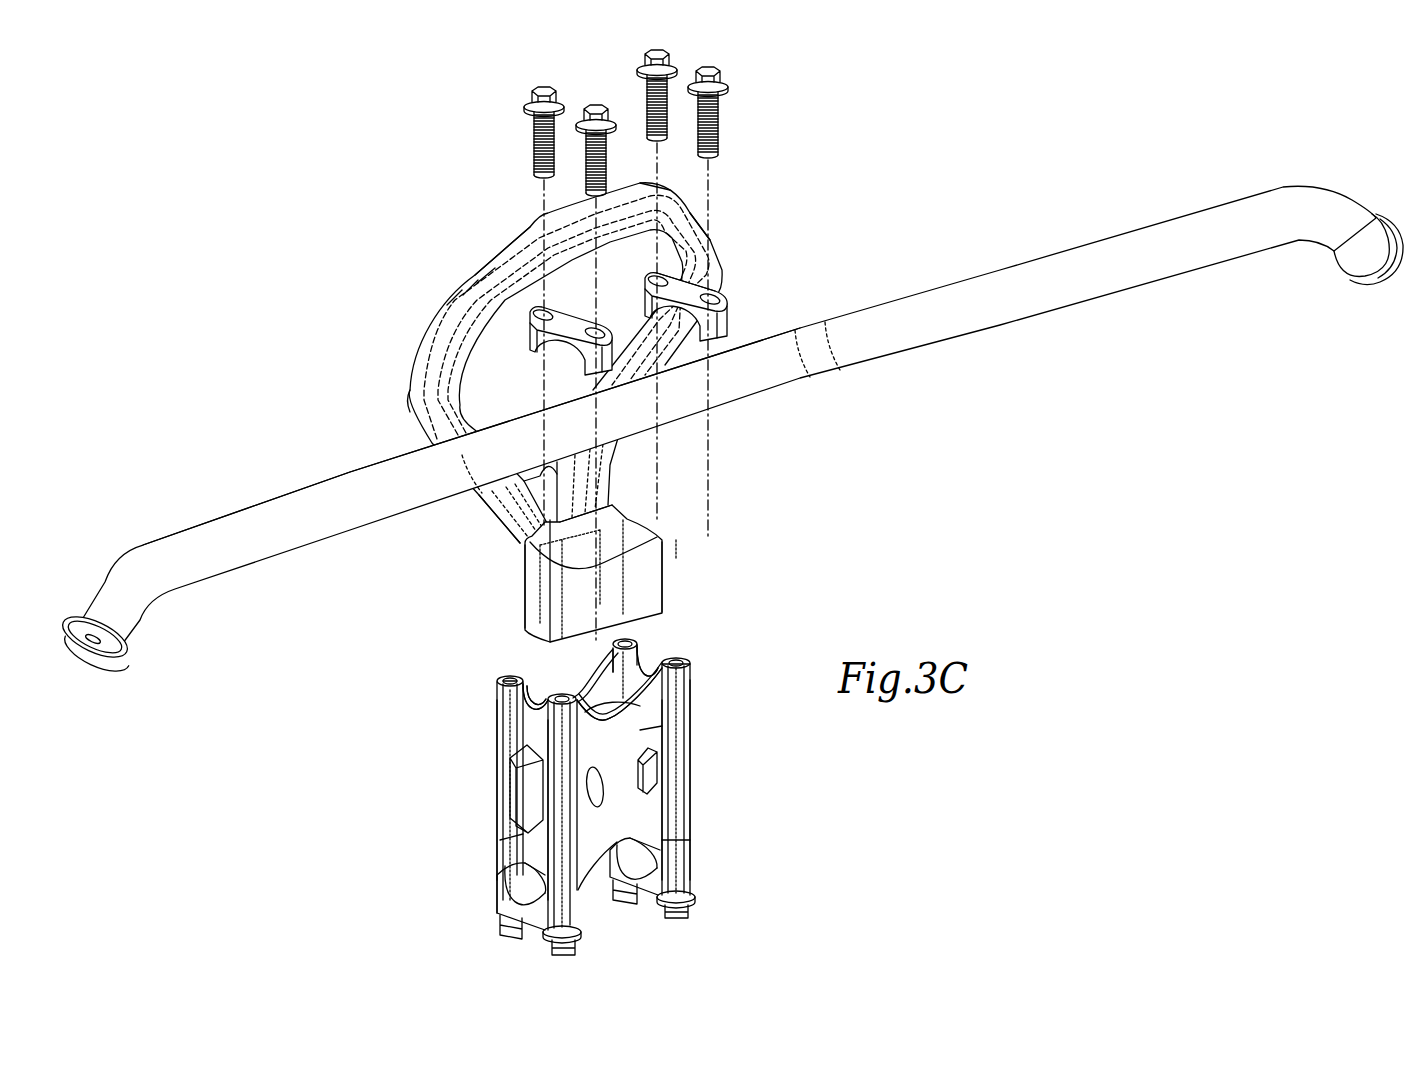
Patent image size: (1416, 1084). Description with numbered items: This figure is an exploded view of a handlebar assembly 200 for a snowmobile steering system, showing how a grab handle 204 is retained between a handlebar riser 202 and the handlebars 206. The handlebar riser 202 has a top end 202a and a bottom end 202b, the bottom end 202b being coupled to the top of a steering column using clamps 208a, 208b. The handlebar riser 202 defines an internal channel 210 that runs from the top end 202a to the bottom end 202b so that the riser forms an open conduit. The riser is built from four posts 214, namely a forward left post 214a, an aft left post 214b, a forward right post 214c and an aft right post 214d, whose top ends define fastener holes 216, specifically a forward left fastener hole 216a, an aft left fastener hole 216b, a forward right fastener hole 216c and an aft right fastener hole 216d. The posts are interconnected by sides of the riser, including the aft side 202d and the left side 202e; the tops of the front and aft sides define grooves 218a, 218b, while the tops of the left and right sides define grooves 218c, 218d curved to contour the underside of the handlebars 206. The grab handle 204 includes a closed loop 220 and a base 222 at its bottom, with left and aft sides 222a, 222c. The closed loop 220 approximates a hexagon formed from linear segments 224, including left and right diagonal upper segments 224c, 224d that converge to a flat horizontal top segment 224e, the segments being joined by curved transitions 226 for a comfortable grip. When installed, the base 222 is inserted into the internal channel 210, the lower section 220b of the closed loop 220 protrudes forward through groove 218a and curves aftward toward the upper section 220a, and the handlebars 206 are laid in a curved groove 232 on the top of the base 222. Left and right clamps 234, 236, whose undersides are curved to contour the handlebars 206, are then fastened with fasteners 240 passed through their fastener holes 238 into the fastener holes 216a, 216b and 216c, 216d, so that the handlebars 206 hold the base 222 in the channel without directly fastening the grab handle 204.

The handlebar assembly 200 is at (287, 240).
The handlebar riser 202 is at (495, 800).
The top end of handlebar riser 202a is at (690, 680).
The bottom end of handlebar riser 202b is at (688, 847).
The aft side of handlebar riser 202d is at (655, 740).
The left side of handlebar riser 202e is at (508, 836).
The grab handle 204 is at (447, 305).
The handlebars 206 is at (130, 570).
The clamp 208a is at (497, 900).
The clamp 208b is at (692, 876).
The internal channel 210 is at (612, 688).
The posts 214 is at (687, 822).
The forward left post 214a is at (500, 765).
The aft left post 214b is at (556, 862).
The forward right post 214c is at (622, 665).
The aft right post 214d is at (687, 797).
The fastener holes 216 is at (512, 680).
The forward left fastener hole 216a is at (508, 680).
The aft left fastener hole 216b is at (560, 703).
The forward right fastener hole 216c is at (645, 637).
The aft right fastener hole 216d is at (690, 664).
The groove 218a is at (572, 696).
The groove 218b is at (640, 705).
The groove 218c is at (516, 705).
The groove 218d is at (650, 690).
The closed loop 220 is at (432, 322).
The upper section of closed loop 220a is at (483, 267).
The lower section of closed loop 220b is at (493, 507).
The base 222 is at (652, 580).
The left side of base 222a is at (533, 588).
The aft side of base 222c is at (645, 560).
The linear segments 224 is at (477, 283).
The left diagonal upper segment 224c is at (463, 295).
The right diagonal upper segment 224d is at (687, 222).
The top segment 224e is at (658, 200).
The curved transitions 226 is at (410, 386).
The groove 232 is at (600, 522).
The left clamp 234 is at (528, 318).
The right clamp 236 is at (724, 316).
The fastener holes 238 is at (715, 290).
The fasteners 240 is at (532, 96).